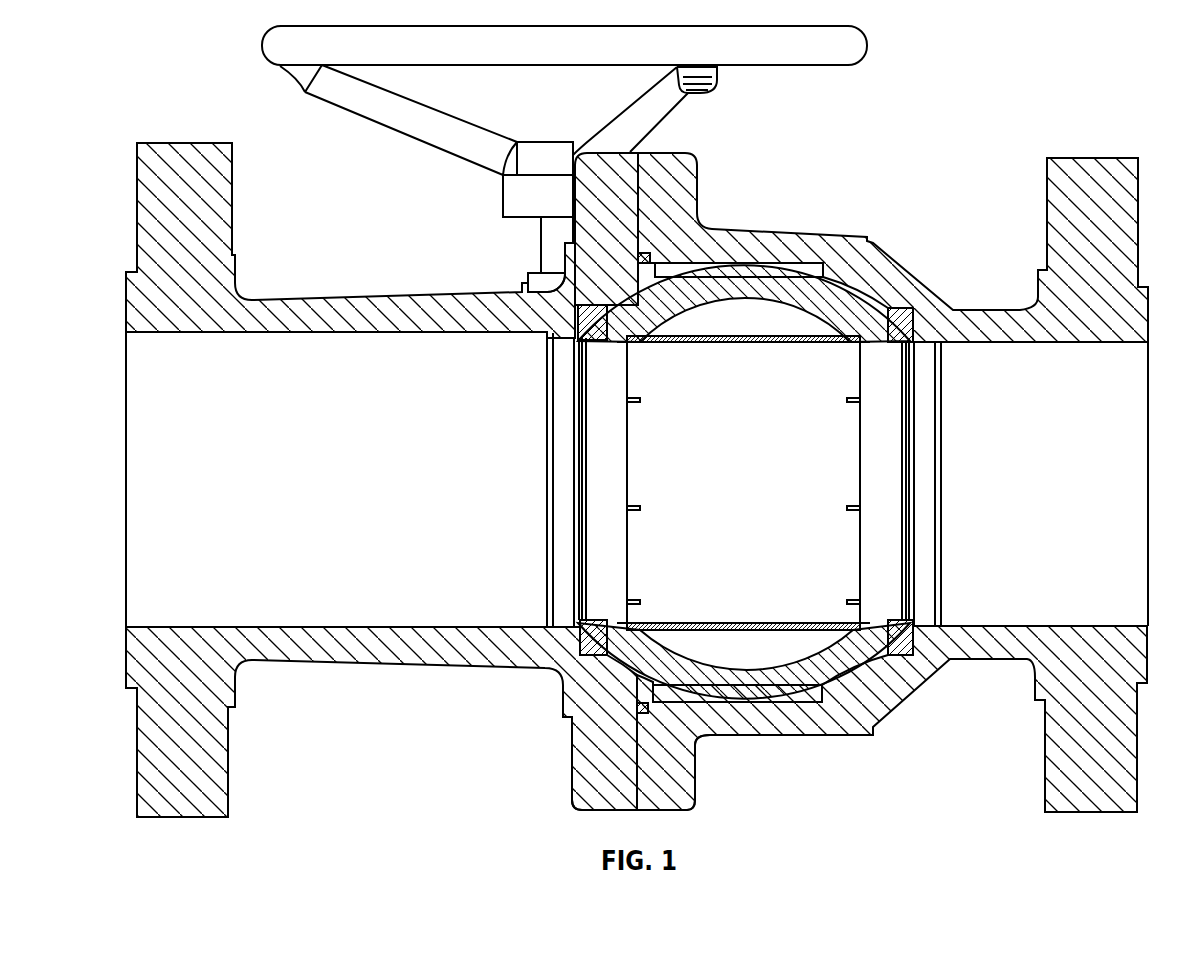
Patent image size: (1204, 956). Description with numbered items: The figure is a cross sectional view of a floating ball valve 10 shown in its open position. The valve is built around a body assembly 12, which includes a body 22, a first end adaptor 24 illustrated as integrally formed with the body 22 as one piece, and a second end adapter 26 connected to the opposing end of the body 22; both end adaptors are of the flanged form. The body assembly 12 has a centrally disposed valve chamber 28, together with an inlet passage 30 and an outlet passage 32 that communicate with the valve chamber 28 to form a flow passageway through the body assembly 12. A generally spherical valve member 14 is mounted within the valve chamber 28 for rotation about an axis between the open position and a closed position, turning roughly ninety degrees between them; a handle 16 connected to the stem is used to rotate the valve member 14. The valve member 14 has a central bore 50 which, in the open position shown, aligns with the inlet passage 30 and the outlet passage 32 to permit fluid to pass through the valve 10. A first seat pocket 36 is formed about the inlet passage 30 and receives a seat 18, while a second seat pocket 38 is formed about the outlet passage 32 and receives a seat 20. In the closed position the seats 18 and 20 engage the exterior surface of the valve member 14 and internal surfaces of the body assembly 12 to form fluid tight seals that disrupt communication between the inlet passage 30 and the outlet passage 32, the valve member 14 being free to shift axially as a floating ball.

The floating ball valve 10 is at (635, 419).
The body assembly 12 is at (278, 300).
The valve member 14 is at (762, 250).
The handle 16 is at (810, 28).
The seat 18 is at (600, 636).
The seat 20 is at (892, 637).
The body 22 is at (762, 737).
The first end adaptor 24 is at (1140, 796).
The second end adapter 26 is at (135, 800).
The valve chamber 28 is at (675, 700).
The inlet passage 30 is at (385, 338).
The outlet passage 32 is at (1028, 345).
The first seat pocket 36 is at (618, 347).
The second seat pocket 38 is at (870, 347).
The central bore 50 is at (745, 345).